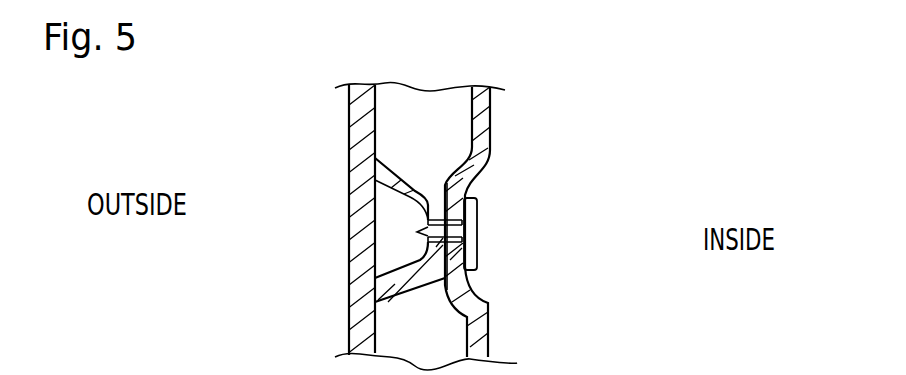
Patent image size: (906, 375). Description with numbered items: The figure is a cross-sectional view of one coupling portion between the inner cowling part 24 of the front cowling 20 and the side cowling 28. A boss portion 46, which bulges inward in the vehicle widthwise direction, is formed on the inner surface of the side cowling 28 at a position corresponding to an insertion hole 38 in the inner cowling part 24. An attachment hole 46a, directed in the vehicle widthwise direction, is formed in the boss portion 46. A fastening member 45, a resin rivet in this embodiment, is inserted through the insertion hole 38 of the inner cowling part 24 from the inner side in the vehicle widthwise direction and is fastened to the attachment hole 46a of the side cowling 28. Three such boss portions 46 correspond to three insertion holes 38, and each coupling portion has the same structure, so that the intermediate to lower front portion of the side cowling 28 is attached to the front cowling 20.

The side cowling 28 is at (349, 125).
The inner cowling part 24 is at (493, 120).
The front cowling 20 is at (545, 222).
The insertion hole 38 is at (466, 234).
The fastening member 45 is at (478, 258).
The boss portion 46 is at (403, 290).
The attachment hole 46a is at (417, 232).